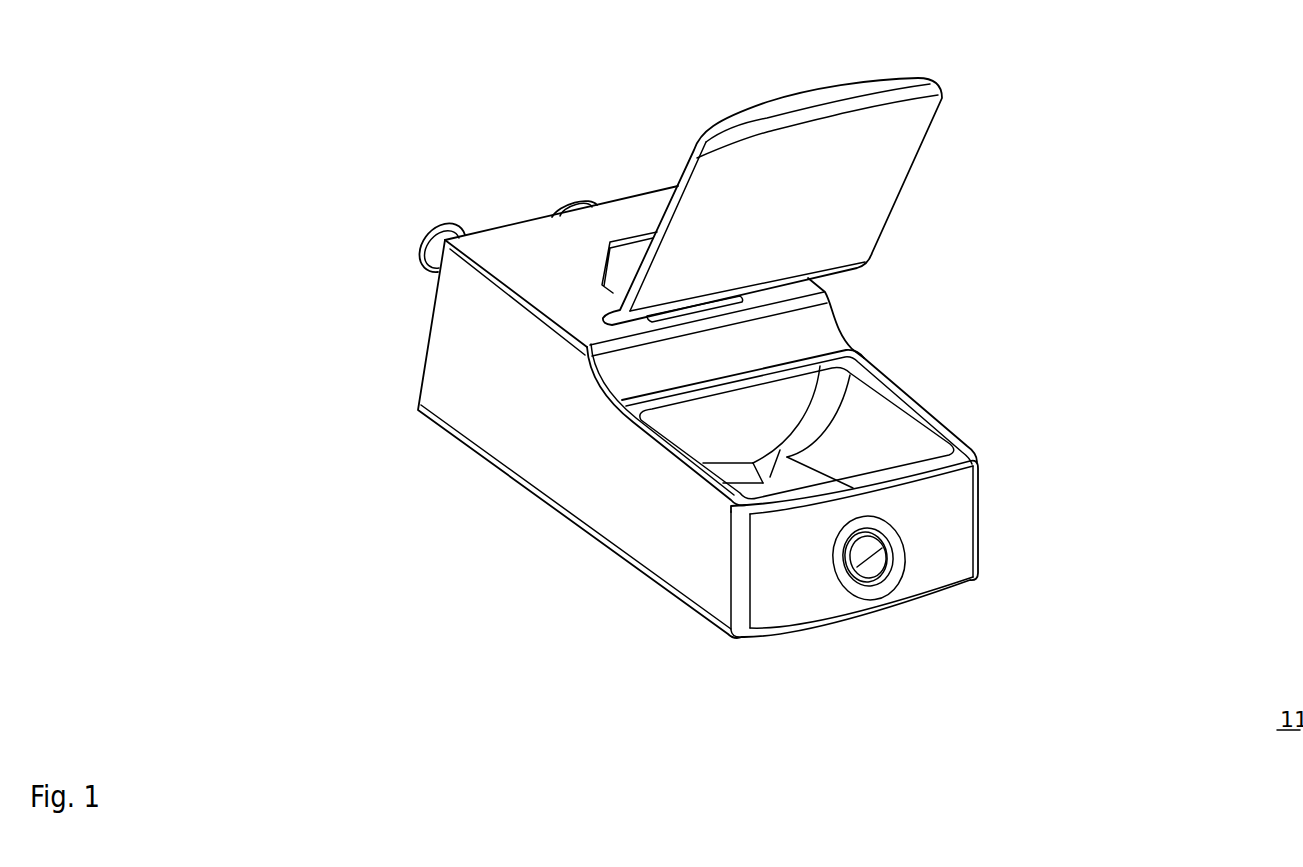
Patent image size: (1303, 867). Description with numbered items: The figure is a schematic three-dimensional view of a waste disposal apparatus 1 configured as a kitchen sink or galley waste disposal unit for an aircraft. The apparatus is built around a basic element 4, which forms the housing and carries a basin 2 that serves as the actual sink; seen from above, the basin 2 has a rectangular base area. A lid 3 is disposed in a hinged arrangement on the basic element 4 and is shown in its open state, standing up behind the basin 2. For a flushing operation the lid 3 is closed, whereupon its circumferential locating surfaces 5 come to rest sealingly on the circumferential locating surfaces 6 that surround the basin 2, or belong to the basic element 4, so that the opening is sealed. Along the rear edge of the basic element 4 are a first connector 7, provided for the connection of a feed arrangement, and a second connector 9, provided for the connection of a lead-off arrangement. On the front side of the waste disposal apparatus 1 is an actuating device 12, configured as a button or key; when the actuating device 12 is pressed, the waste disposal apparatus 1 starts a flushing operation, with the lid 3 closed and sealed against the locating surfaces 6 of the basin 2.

The waste disposal apparatus 1 is at (432, 88).
The basin 2 is at (877, 423).
The lid 3 is at (878, 153).
The basic element 4 is at (533, 430).
The circumferential locating surfaces 5 is at (695, 187).
The circumferential locating surfaces 6 is at (633, 420).
The first connector 7 is at (553, 216).
The second connector 9 is at (423, 244).
The actuating device 12 is at (865, 567).